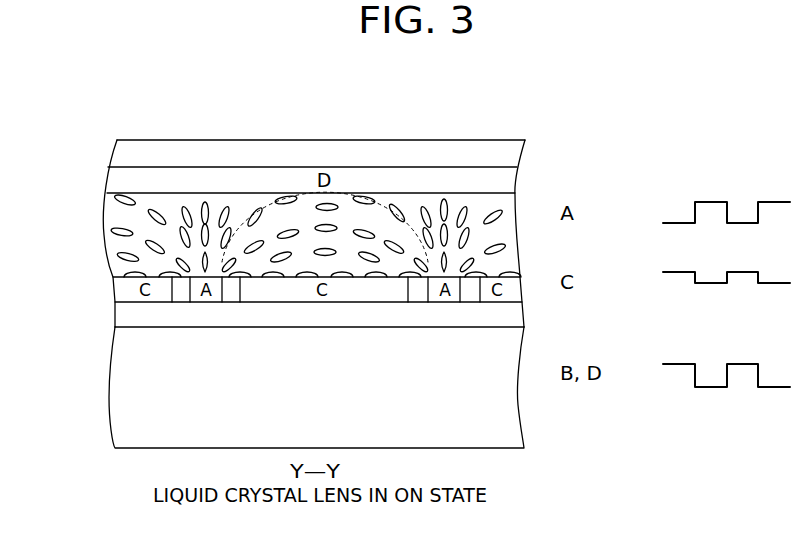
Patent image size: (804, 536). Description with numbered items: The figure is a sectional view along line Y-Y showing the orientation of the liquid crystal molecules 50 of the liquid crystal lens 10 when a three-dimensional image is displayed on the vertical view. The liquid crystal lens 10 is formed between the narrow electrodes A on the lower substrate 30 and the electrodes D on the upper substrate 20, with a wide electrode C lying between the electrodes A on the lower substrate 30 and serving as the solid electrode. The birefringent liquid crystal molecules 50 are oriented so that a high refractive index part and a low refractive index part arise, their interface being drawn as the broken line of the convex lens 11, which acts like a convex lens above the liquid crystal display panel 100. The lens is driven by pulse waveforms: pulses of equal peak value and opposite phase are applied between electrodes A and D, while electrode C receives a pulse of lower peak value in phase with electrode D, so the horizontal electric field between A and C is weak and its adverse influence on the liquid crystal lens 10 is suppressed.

The liquid crystal lens 10 is at (88, 142).
The convex lens 11 is at (267, 212).
The upper substrate 20 is at (152, 147).
The lower substrate 30 is at (113, 320).
The liquid crystal molecules 50 is at (205, 203).
The liquid crystal display panel 100 is at (120, 407).